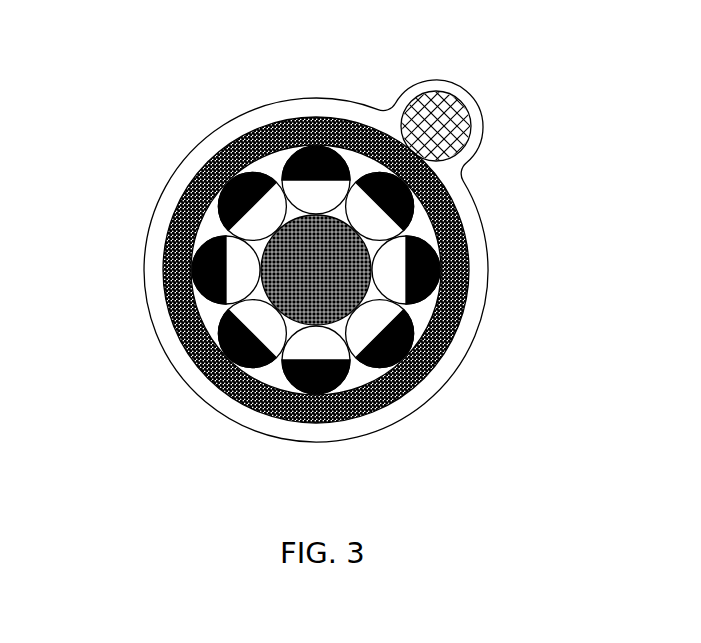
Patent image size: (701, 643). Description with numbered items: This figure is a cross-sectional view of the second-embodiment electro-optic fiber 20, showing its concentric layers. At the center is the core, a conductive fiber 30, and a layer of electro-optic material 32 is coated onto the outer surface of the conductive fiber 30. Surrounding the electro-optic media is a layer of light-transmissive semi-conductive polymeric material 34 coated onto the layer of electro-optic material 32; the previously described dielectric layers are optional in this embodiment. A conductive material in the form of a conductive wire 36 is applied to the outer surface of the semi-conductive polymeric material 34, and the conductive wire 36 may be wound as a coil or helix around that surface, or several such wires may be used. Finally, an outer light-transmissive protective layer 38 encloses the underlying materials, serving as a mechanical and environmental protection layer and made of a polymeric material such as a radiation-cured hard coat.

The electro-optic fiber 20 is at (113, 97).
The conductive fiber 30 is at (332, 283).
The layer of electro-optic material 32 is at (398, 303).
The layer of light-transmissive semi-conductive polymeric material 34 is at (467, 230).
The conductive wire 36 is at (473, 113).
The outer light-transmissive protective layer 38 is at (313, 100).